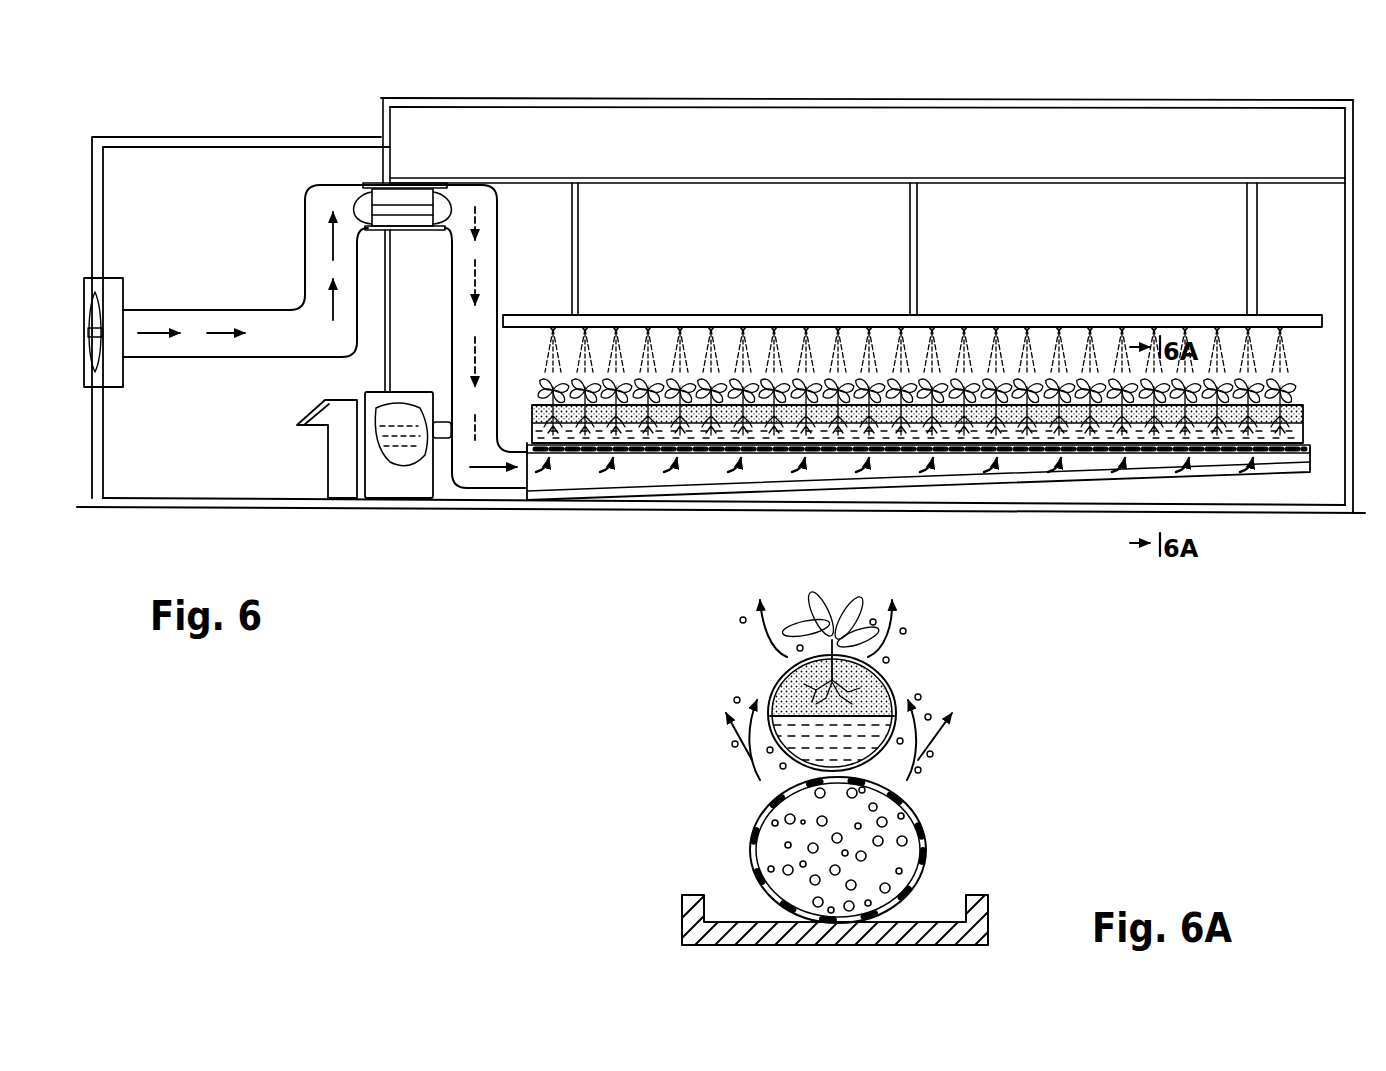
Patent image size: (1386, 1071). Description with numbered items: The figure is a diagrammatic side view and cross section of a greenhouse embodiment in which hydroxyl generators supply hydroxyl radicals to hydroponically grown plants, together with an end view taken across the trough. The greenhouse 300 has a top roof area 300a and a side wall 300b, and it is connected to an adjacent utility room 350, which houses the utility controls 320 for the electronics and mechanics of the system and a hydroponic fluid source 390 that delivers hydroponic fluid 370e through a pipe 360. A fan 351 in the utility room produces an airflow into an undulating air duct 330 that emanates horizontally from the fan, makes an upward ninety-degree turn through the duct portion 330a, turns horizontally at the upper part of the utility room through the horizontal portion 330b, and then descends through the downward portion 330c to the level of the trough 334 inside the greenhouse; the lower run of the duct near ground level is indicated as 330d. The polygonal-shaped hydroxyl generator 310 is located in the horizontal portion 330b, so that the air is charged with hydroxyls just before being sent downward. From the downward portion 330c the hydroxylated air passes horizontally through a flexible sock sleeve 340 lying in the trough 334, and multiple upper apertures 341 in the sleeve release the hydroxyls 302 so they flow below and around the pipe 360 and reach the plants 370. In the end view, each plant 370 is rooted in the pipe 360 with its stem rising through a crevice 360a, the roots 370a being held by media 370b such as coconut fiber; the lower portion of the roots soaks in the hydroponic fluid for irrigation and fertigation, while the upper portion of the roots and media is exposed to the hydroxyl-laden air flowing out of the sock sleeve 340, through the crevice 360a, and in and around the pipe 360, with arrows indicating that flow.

In FIG. 6, the greenhouse 300 is at (868, 97).
In FIG. 6, the top roof area 300a is at (667, 98).
In FIG. 6, the side wall 300b is at (383, 163).
In FIG. 6, the hydroxyl generator 310 is at (400, 206).
In FIG. 6, the utility controls 320 is at (311, 410).
In FIG. 6, the air duct 330 is at (1353, 100).
In FIG. 6, the upward air duct portion 330a is at (305, 245).
In FIG. 6, the horizontal air duct portion 330b is at (327, 185).
In FIG. 6, the downward air duct portion 330c is at (497, 236).
In FIG. 6, the duct outlet 330d is at (448, 509).
In FIG. 6, the trough 334 is at (1062, 470).
In FIG. 6A, the trough 334 is at (990, 910).
In FIG. 6, the flexible sock sleeve 340 is at (965, 466).
In FIG. 6A, the flexible sock sleeve 340 is at (925, 858).
In FIG. 6, the upper apertures 341 is at (590, 456).
In FIG. 6A, the upper apertures 341 is at (800, 795).
In FIG. 6, the utility room 350 is at (216, 201).
In FIG. 6, the fan 351 is at (123, 281).
In FIG. 6, the hydroponic fluid pipe 360 is at (1300, 405).
In FIG. 6A, the hydroponic fluid pipe 360 is at (893, 676).
In FIG. 6A, the crevice 360a is at (855, 650).
In FIG. 6A, the plant 370 is at (793, 607).
In FIG. 6, the roots 370a is at (655, 450).
In FIG. 6A, the roots 370a is at (792, 665).
In FIG. 6, the media 370b is at (697, 410).
In FIG. 6A, the media 370b is at (868, 700).
In FIG. 6A, the hydroponic fluid 370e is at (782, 710).
In FIG. 6A, the hydroponic fluid source 390 is at (795, 690).
In FIG. 6A, the hydroxyls 302 is at (790, 870).